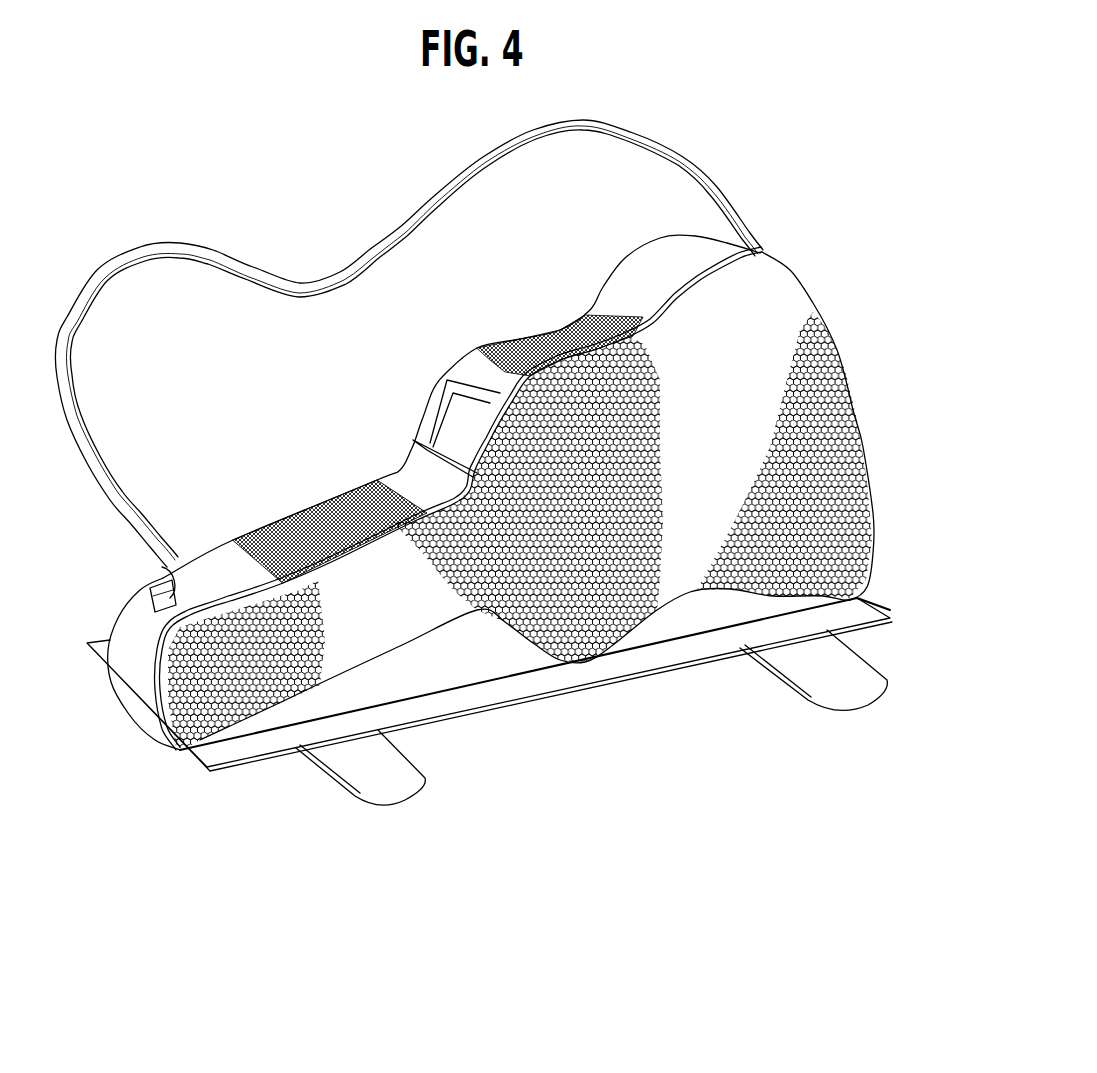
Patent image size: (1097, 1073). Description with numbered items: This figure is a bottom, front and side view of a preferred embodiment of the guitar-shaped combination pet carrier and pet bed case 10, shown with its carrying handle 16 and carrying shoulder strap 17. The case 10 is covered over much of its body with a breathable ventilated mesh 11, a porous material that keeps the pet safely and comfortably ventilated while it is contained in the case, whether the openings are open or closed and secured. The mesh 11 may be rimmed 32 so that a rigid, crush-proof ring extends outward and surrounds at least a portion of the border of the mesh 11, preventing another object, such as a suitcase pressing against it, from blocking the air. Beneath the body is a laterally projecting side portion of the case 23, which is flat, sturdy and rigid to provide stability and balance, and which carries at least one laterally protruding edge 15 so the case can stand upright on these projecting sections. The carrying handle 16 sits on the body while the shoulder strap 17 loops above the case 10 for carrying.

The guitar-shaped combination pet carrier and pet bed case 10 is at (943, 695).
The breathable ventilated mesh 11 is at (347, 490).
The laterally protruding edge 15 is at (347, 767).
The carrying handle 16 is at (440, 405).
The carrying shoulder strap 17 is at (345, 268).
The laterally projecting side portion of the case 23 is at (580, 673).
The rim 32 is at (303, 507).